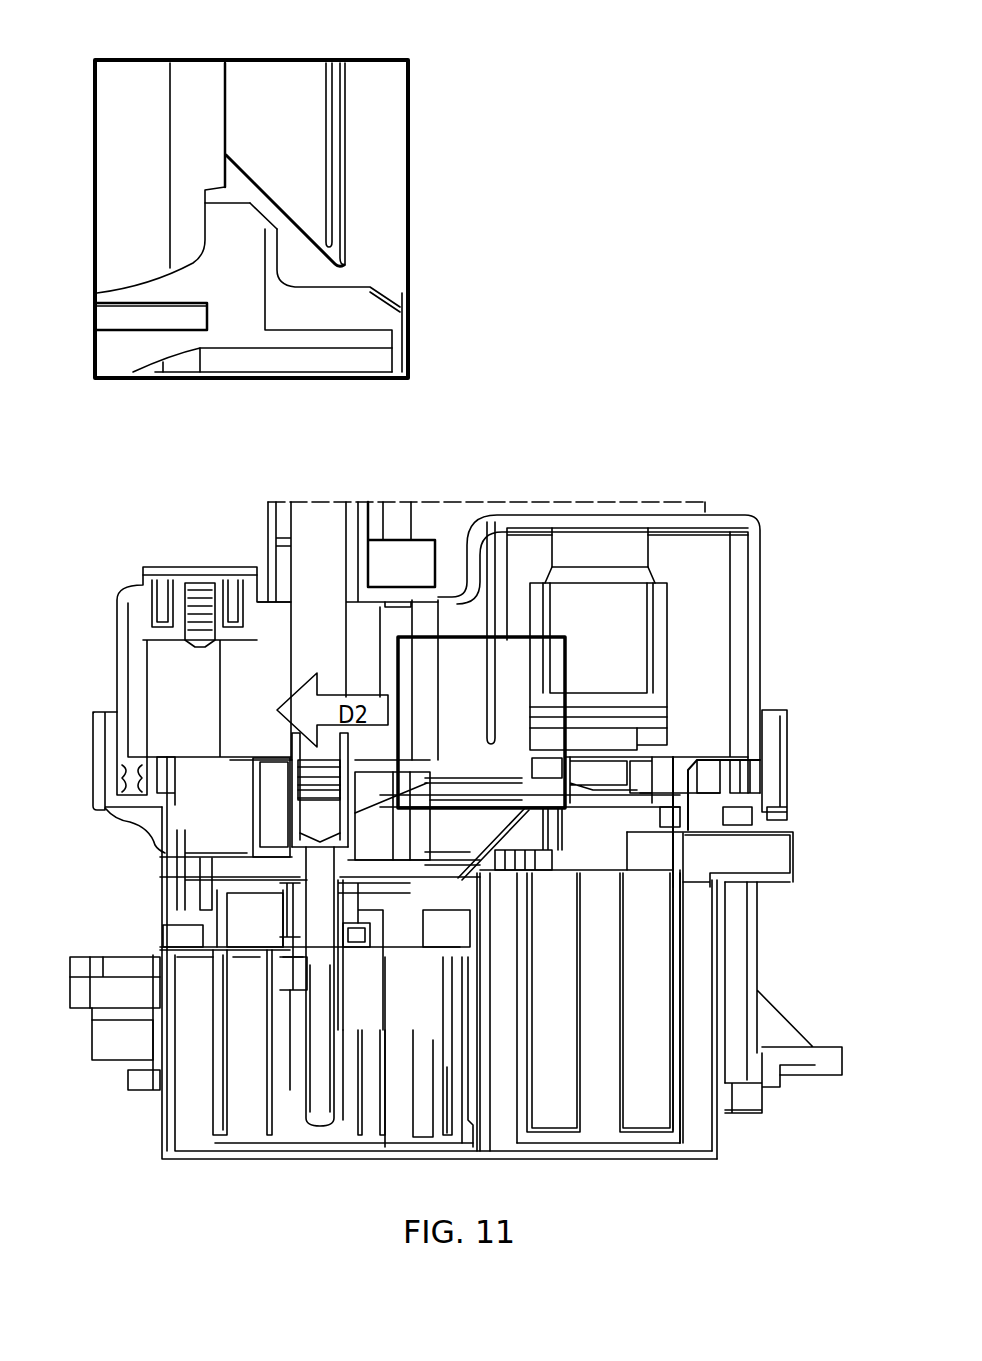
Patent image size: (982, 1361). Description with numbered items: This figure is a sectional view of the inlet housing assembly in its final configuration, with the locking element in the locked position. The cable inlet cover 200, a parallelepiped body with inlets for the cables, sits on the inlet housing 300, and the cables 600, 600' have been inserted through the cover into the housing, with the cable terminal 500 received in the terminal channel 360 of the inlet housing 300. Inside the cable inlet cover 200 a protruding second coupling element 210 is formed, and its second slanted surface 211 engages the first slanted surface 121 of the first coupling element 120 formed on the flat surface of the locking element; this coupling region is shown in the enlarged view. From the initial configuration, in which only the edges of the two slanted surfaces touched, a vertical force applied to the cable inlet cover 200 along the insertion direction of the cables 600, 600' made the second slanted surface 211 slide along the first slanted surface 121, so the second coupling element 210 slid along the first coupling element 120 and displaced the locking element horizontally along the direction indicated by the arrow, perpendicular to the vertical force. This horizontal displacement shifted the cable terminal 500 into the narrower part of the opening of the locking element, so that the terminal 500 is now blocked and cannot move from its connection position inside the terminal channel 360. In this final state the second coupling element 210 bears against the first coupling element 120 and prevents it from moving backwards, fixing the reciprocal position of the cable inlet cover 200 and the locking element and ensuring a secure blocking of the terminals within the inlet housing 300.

The second coupling element 210 is at (287, 98).
The second slanted surface 211 is at (332, 258).
The first coupling element 120 is at (202, 272).
The first slanted surface 121 is at (252, 218).
The cable 600' is at (336, 525).
The cable 600 is at (177, 615).
The cable inlet cover 200 is at (783, 588).
The cable terminal 500 is at (308, 823).
The inlet housing 300 is at (783, 943).
The terminal channel 360 is at (320, 970).